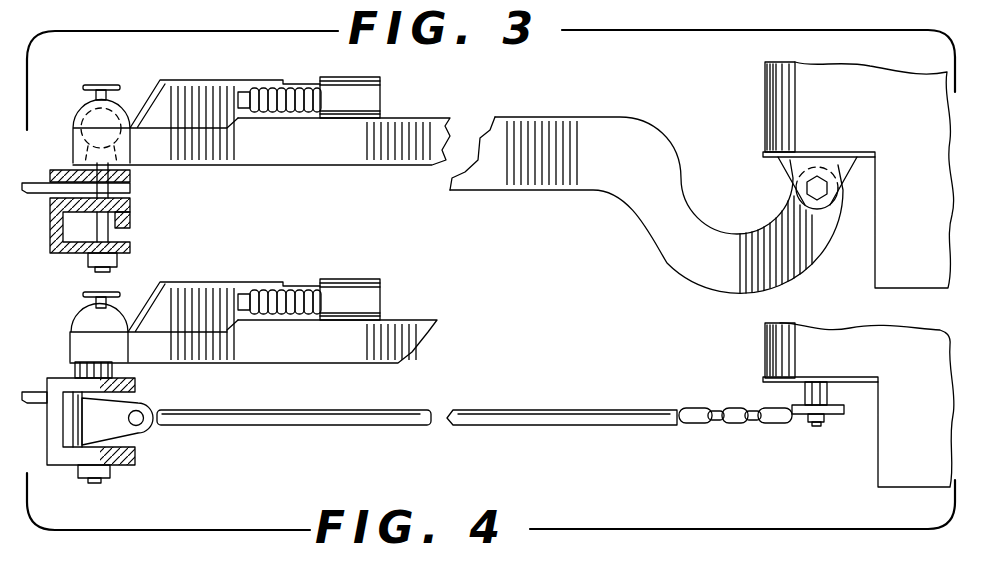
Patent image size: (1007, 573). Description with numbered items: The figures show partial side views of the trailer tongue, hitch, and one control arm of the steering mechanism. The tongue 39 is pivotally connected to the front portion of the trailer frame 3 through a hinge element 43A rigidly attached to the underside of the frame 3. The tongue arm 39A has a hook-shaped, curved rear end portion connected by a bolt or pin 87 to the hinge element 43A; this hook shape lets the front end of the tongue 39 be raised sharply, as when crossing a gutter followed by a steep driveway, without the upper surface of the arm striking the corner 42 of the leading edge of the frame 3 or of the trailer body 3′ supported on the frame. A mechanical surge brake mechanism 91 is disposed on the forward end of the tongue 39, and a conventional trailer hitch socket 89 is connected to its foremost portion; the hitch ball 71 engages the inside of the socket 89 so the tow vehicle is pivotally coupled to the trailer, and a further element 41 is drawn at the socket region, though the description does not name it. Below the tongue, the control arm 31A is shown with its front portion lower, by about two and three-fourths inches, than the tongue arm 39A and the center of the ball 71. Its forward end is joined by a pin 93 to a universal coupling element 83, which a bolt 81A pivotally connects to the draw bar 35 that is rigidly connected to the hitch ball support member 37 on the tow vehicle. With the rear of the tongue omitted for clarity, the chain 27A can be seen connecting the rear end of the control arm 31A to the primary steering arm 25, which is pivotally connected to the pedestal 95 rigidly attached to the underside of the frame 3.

In FIG. 3, the trailer frame 3 is at (823, 156).
In FIG. 4, the trailer frame 3 is at (838, 378).
In FIG. 3, the trailer body 3′ is at (752, 100).
In FIG. 4, the trailer body 3′ is at (752, 357).
In FIG. 4, the primary steering arm 25 is at (815, 421).
In FIG. 4, the chain 27A is at (705, 425).
In FIG. 4, the control arm 31A is at (326, 426).
In FIG. 3, the draw bar 35 is at (142, 208).
In FIG. 4, the draw bar 35 is at (152, 382).
In FIG. 3, the hitch ball support member 37 is at (132, 190).
In FIG. 4, the hitch ball support member 37 is at (37, 392).
In FIG. 3, the tongue 39 is at (270, 192).
In FIG. 3, the tongue arm 39A is at (292, 164).
In FIG. 4, the tongue arm 39A is at (328, 366).
In FIG. 3, the clamp knob 41 is at (78, 110).
In FIG. 3, the corner 42 is at (766, 154).
In FIG. 4, the corner 42 is at (760, 381).
In FIG. 3, the hinge element 43A is at (790, 166).
In FIG. 3, the hitch ball 71 is at (123, 141).
In FIG. 4, the bolt 81A is at (85, 452).
In FIG. 4, the coupling element 83 is at (148, 434).
In FIG. 3, the bolt or pin 87 is at (838, 208).
In FIG. 4, the trailer hitch socket 89 is at (78, 325).
In FIG. 3, the mechanical surge brake mechanism 91 is at (242, 76).
In FIG. 4, the mechanical surge brake mechanism 91 is at (254, 281).
In FIG. 4, the pin 93 is at (143, 411).
In FIG. 4, the pedestal 95 is at (832, 397).